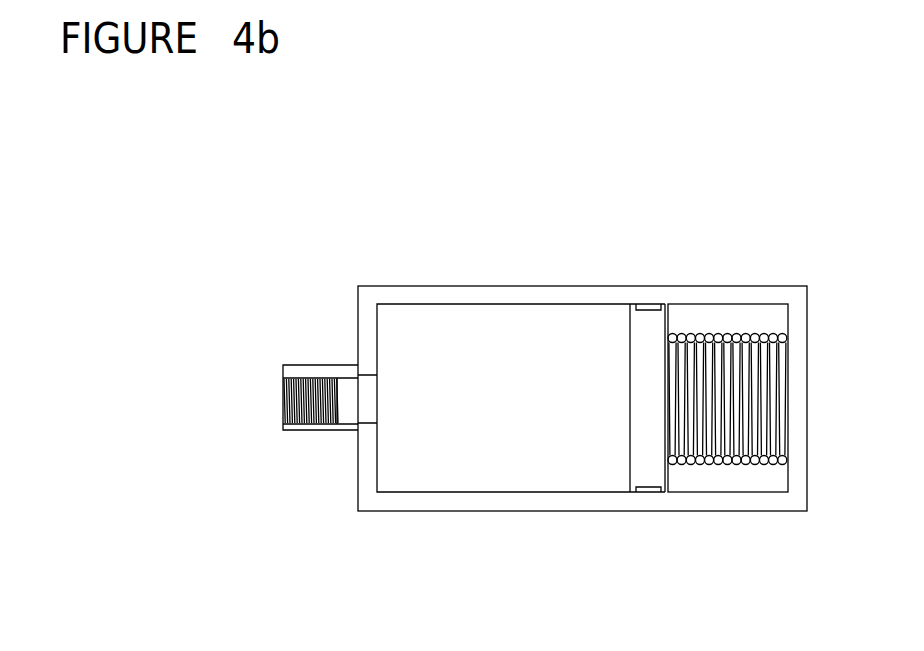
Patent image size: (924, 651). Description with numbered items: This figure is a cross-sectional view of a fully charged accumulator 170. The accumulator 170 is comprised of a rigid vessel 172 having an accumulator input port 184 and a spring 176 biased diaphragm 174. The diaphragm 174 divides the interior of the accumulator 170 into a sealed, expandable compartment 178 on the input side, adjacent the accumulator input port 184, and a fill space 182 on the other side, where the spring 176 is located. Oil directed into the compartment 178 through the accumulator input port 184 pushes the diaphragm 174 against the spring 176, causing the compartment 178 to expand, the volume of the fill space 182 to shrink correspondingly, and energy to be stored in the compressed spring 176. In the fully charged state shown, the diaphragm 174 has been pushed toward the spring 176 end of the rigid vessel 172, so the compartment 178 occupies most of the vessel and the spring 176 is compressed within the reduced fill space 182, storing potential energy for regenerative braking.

The accumulator 170 is at (265, 198).
The rigid vessel 172 is at (805, 338).
The diaphragm 174 is at (658, 323).
The spring 176 is at (717, 462).
The compartment 178 is at (485, 325).
The fill space 182 is at (750, 472).
The accumulator input port 184 is at (298, 393).